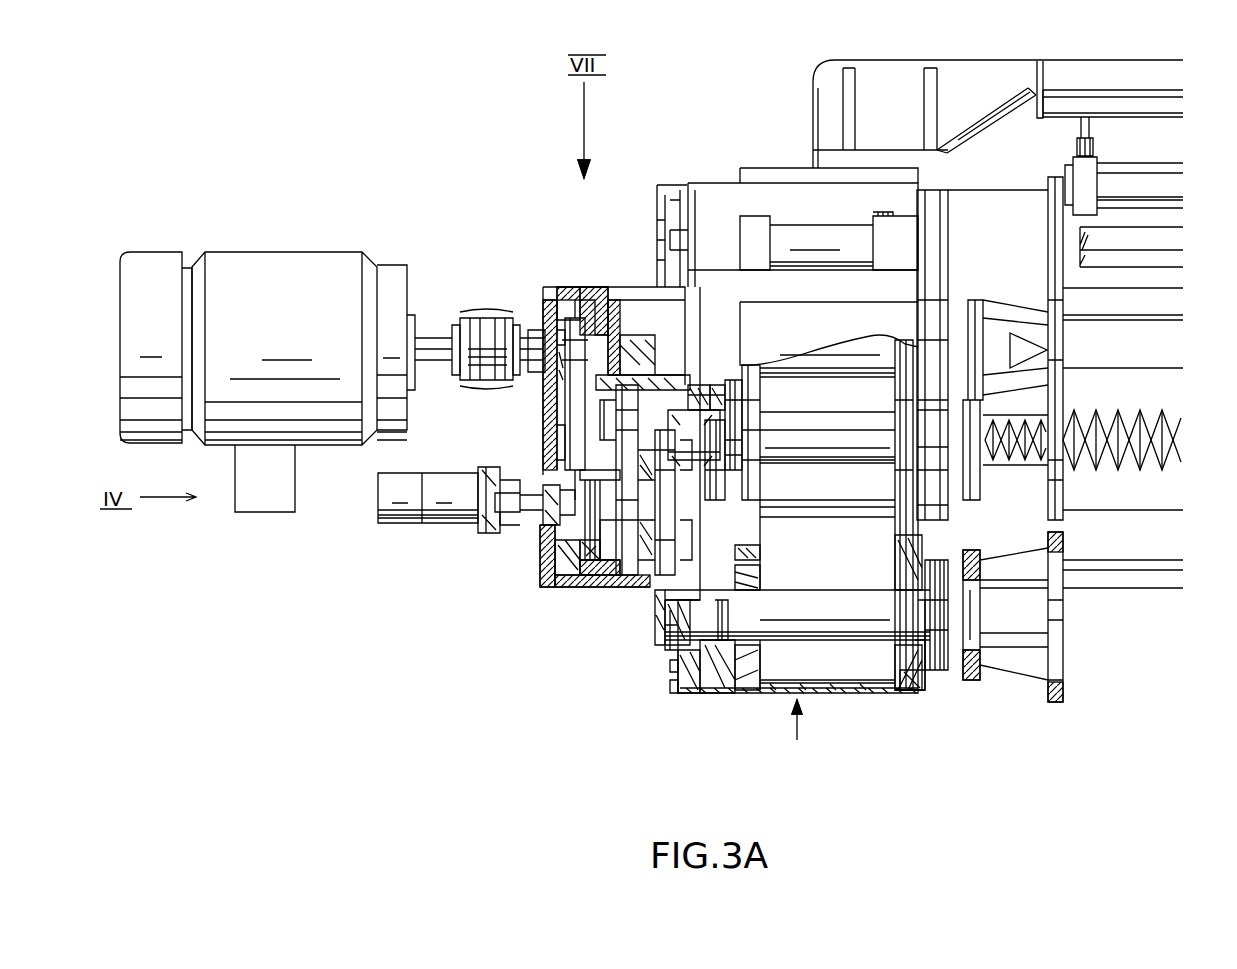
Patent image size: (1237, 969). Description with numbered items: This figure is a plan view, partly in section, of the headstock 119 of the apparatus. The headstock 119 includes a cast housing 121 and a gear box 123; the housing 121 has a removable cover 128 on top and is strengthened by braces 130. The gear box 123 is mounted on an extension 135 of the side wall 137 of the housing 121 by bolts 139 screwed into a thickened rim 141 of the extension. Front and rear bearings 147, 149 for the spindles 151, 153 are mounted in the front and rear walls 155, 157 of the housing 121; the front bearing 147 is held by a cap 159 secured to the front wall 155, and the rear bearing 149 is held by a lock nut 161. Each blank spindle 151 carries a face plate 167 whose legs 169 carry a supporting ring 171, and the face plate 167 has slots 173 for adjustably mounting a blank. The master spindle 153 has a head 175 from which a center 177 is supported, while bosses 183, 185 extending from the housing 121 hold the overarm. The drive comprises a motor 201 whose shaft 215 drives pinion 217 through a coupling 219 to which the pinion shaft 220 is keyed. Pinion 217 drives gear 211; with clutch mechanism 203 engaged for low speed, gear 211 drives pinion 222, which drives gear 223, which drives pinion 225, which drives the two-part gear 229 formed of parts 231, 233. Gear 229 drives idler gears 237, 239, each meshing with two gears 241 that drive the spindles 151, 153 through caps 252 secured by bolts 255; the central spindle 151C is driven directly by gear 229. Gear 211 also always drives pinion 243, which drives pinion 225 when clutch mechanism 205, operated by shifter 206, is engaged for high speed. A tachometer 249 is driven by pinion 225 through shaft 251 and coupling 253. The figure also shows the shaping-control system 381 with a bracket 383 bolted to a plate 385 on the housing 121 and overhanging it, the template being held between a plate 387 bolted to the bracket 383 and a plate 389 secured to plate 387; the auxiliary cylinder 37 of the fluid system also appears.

The auxiliary cylinder 37 is at (1166, 164).
The headstock 119 is at (812, 766).
The housing 121 is at (678, 177).
The gear box 123 is at (600, 296).
The removable cover 128 is at (786, 314).
The braces 130 is at (878, 438).
The extension 135 is at (724, 698).
The side wall 137 is at (850, 698).
The bolts 139 is at (676, 700).
The thickened rim 141 is at (690, 698).
The front bearing 147 is at (895, 548).
The rear bearing 149 is at (766, 582).
The spindle 151 is at (868, 632).
The central spindle 151C is at (876, 420).
The master spindle 153 is at (828, 358).
The front wall 155 is at (912, 698).
The rear wall 157 is at (750, 478).
The cap 159 is at (940, 682).
The lock nut 161 is at (722, 596).
The face plate 167 is at (1063, 490).
The legs 169 is at (1028, 552).
The supporting ring 171 is at (970, 552).
The slots 173 is at (1052, 665).
The head 175 is at (988, 302).
The center 177 is at (1052, 333).
The boss 183 is at (752, 214).
The boss 185 is at (870, 232).
The motor 201 is at (325, 252).
The clutch mechanism 203 is at (648, 340).
The clutch mechanism 205 is at (555, 545).
The shifter 206 is at (586, 553).
The gear 211 is at (554, 393).
The shaft 215 is at (446, 336).
The pinion 217 is at (566, 292).
The coupling 219 is at (470, 312).
The shaft 220 is at (528, 324).
The pinion 222 is at (628, 396).
The gear 223 is at (630, 568).
The pinion 225 is at (612, 575).
The gear 229 is at (696, 382).
The gear part 231 is at (710, 447).
The gear part 233 is at (726, 382).
The idler gear 237 is at (746, 556).
The idler gear 239 is at (716, 384).
The gear 241 is at (676, 678).
The pinion 243 is at (545, 520).
The tachometer 249 is at (406, 522).
The shaft 251 is at (512, 470).
The cap 252 is at (655, 622).
The coupling 253 is at (483, 460).
The bolts 255 is at (656, 636).
The system 381 is at (798, 92).
The bracket 383 is at (956, 60).
The plate 385 is at (786, 170).
The plate 387 is at (1086, 96).
The plate 389 is at (1070, 118).